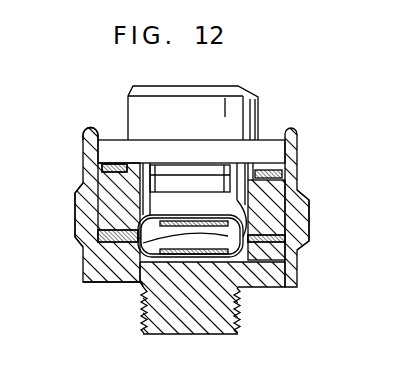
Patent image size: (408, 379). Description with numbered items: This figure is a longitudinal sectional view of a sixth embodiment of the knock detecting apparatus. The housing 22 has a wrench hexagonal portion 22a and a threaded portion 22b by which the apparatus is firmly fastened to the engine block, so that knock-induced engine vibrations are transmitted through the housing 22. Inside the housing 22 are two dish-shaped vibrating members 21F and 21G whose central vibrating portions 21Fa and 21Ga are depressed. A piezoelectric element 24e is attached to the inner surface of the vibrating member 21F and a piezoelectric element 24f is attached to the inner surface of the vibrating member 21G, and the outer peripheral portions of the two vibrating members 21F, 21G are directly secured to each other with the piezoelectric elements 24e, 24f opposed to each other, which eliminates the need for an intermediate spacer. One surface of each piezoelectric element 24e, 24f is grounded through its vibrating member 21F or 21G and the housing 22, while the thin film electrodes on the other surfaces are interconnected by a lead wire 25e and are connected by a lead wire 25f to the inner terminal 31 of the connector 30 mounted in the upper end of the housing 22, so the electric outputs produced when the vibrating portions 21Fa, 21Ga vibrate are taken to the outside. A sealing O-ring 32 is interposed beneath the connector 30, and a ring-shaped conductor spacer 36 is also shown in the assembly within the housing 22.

The connector 30 is at (259, 101).
The sealing O-ring 32 is at (298, 174).
The wrench hexagonal portion 22a is at (300, 252).
The lead wire 25f is at (286, 220).
The vibrating member 21G is at (100, 209).
The vibrating portion 21Ga is at (89, 185).
The piezoelectric element 24f is at (98, 247).
The lead wire 25e is at (138, 242).
The vibrating member 21F is at (139, 246).
The housing 22 is at (280, 272).
The vibrating portion 21Fa is at (148, 333).
The threaded portion 22b is at (238, 333).
The piezoelectric element 24e is at (249, 286).
The inner terminal 31 is at (228, 198).
The ring-shaped conductor spacer 36 is at (222, 210).